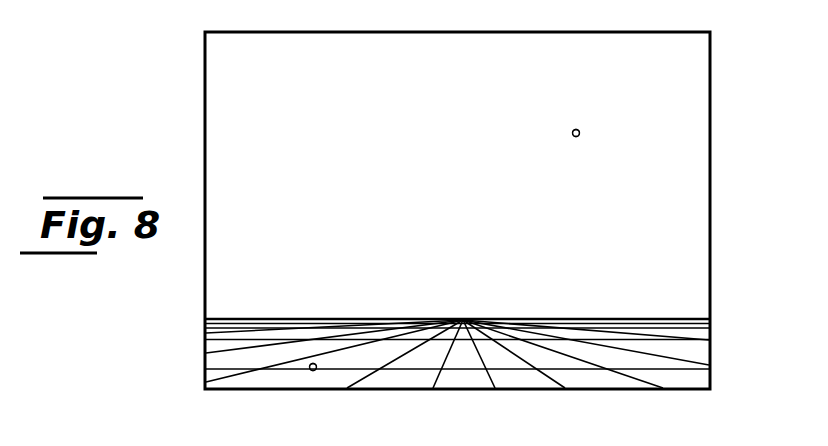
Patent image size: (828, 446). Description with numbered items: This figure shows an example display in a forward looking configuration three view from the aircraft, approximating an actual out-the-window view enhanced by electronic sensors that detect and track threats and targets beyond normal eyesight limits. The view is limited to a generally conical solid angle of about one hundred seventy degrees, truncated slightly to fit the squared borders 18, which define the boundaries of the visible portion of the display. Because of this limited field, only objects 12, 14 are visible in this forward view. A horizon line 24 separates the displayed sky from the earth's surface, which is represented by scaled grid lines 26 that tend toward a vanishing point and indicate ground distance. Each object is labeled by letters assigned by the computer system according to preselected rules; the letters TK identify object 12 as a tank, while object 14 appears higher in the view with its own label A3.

The borders 18 is at (711, 130).
The horizon line 24 is at (590, 319).
The scaled grid lines 26 is at (483, 321).
The object 14 is at (572, 133).
The aircraft position designation A3 is at (589, 121).
The object 12 is at (317, 368).
The identifying letters TK is at (314, 353).